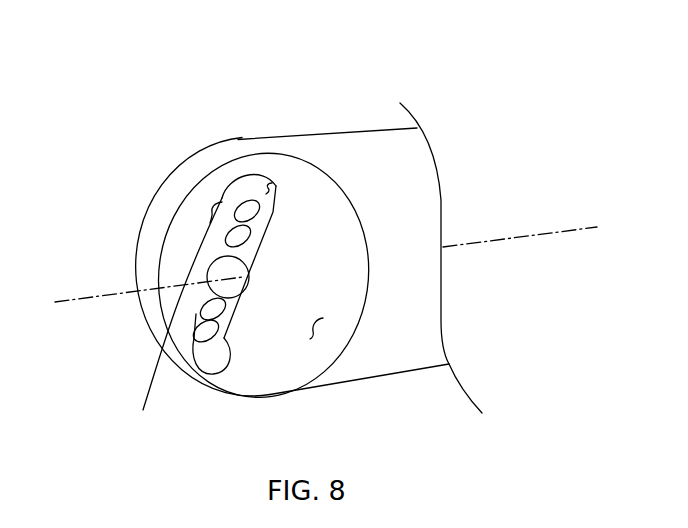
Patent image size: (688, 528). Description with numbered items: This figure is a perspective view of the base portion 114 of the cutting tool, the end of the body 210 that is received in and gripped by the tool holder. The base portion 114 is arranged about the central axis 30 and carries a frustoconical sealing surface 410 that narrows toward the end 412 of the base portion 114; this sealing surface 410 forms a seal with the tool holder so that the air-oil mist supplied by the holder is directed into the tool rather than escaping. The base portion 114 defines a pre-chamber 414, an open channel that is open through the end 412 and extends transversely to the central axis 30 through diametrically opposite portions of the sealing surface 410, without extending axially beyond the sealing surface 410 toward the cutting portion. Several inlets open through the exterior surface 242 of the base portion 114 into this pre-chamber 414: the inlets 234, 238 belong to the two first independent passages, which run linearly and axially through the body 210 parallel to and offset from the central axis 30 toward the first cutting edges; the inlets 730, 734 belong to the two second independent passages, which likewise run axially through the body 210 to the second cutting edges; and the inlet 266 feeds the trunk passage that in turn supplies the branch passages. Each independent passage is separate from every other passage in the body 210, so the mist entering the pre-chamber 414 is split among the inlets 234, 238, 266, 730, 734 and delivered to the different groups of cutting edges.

The base portion 114 is at (330, 150).
The body 210 is at (375, 130).
The end 412 is at (252, 305).
The central axis 30 is at (510, 238).
The inlet 266 is at (228, 253).
The inlet 234 is at (230, 227).
The inlet 734 is at (167, 319).
The inlet 730 is at (251, 200).
The inlet 238 is at (196, 314).
The exterior surface 242 is at (221, 202).
The pre-chamber 414 is at (270, 185).
The frustoconical sealing surface 410 is at (321, 333).